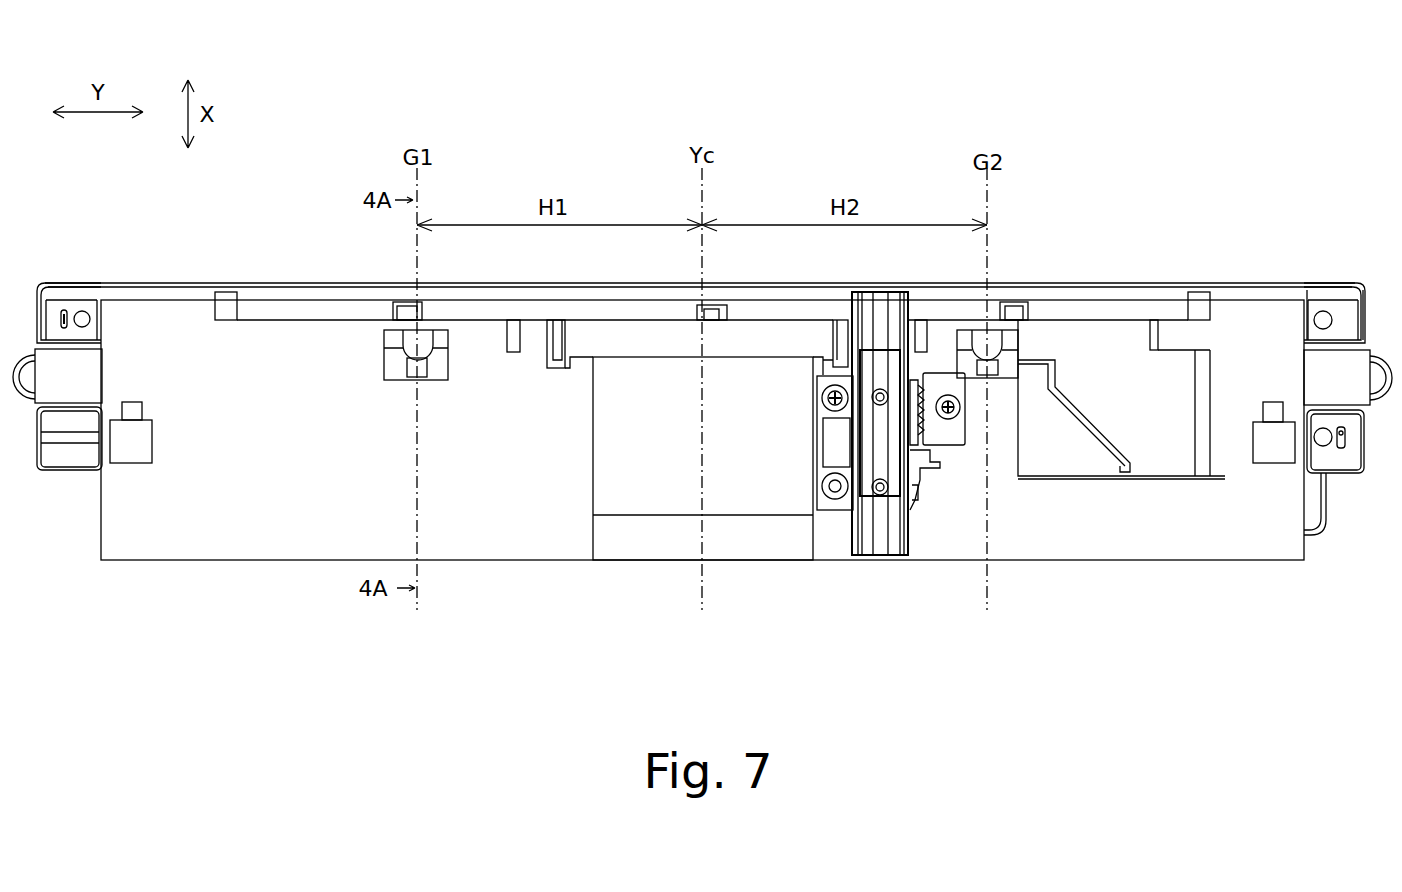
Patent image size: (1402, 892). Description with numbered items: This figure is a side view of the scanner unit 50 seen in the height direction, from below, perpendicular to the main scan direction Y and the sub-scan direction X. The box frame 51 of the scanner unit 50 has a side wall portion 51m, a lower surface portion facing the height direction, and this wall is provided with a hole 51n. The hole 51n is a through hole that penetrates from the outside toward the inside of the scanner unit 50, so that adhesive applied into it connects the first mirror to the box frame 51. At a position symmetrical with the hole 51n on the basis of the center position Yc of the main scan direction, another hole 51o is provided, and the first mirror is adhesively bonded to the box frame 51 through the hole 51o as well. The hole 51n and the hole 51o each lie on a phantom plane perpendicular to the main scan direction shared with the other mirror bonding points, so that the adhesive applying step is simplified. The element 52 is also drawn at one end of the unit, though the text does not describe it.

The scanner unit 50 is at (1189, 243).
The box frame 51 is at (268, 560).
The side wall portion (lower surface portion) 51m is at (525, 505).
The hole 51n is at (384, 370).
The hole 51o is at (1000, 361).
The end cover 52 is at (1338, 277).